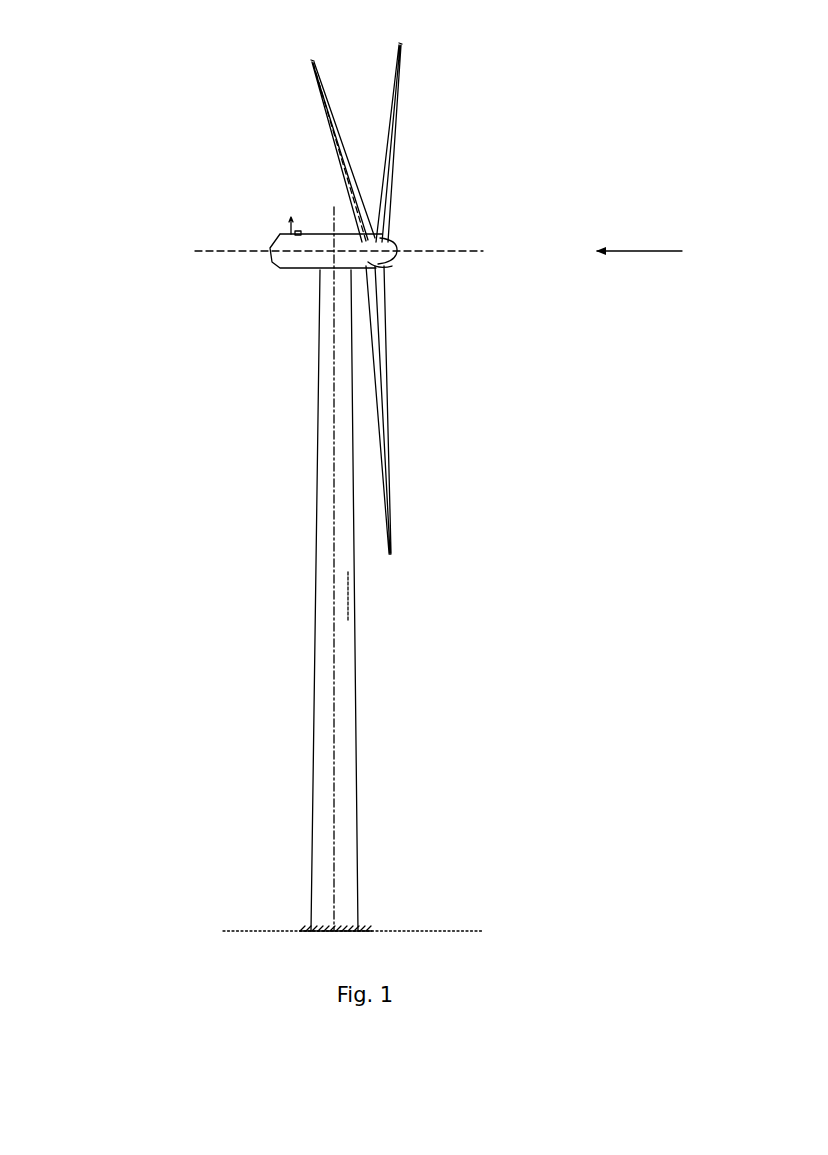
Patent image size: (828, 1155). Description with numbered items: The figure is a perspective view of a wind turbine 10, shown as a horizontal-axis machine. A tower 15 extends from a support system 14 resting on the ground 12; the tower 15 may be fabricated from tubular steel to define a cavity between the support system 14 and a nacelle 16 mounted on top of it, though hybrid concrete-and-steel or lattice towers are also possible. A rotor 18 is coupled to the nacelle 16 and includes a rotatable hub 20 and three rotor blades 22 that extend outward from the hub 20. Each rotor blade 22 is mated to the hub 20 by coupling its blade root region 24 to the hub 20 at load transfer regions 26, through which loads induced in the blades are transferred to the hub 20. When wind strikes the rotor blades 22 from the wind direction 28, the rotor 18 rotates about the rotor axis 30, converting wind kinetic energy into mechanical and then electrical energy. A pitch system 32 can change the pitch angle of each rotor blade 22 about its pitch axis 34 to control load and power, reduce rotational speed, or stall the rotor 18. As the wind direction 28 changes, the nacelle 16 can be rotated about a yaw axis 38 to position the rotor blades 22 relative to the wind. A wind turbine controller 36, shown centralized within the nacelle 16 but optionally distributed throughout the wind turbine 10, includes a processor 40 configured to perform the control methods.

The wind turbine 10 is at (124, 66).
The ground 12 is at (246, 929).
The support system 14 is at (306, 929).
The tower 15 is at (330, 578).
The nacelle 16 is at (297, 270).
The rotor 18 is at (404, 167).
The rotatable hub 20 is at (398, 246).
The rotor blade 22 is at (337, 120).
The blade root region 24 is at (386, 338).
The load transfer region 26 is at (390, 268).
The wind direction 28 is at (655, 250).
The rotor axis 30 is at (460, 254).
The pitch system 32 is at (372, 292).
The pitch axis 34 is at (310, 62).
The wind turbine controller 36 is at (326, 294).
The yaw axis 38 is at (335, 638).
The processor 40 is at (345, 240).